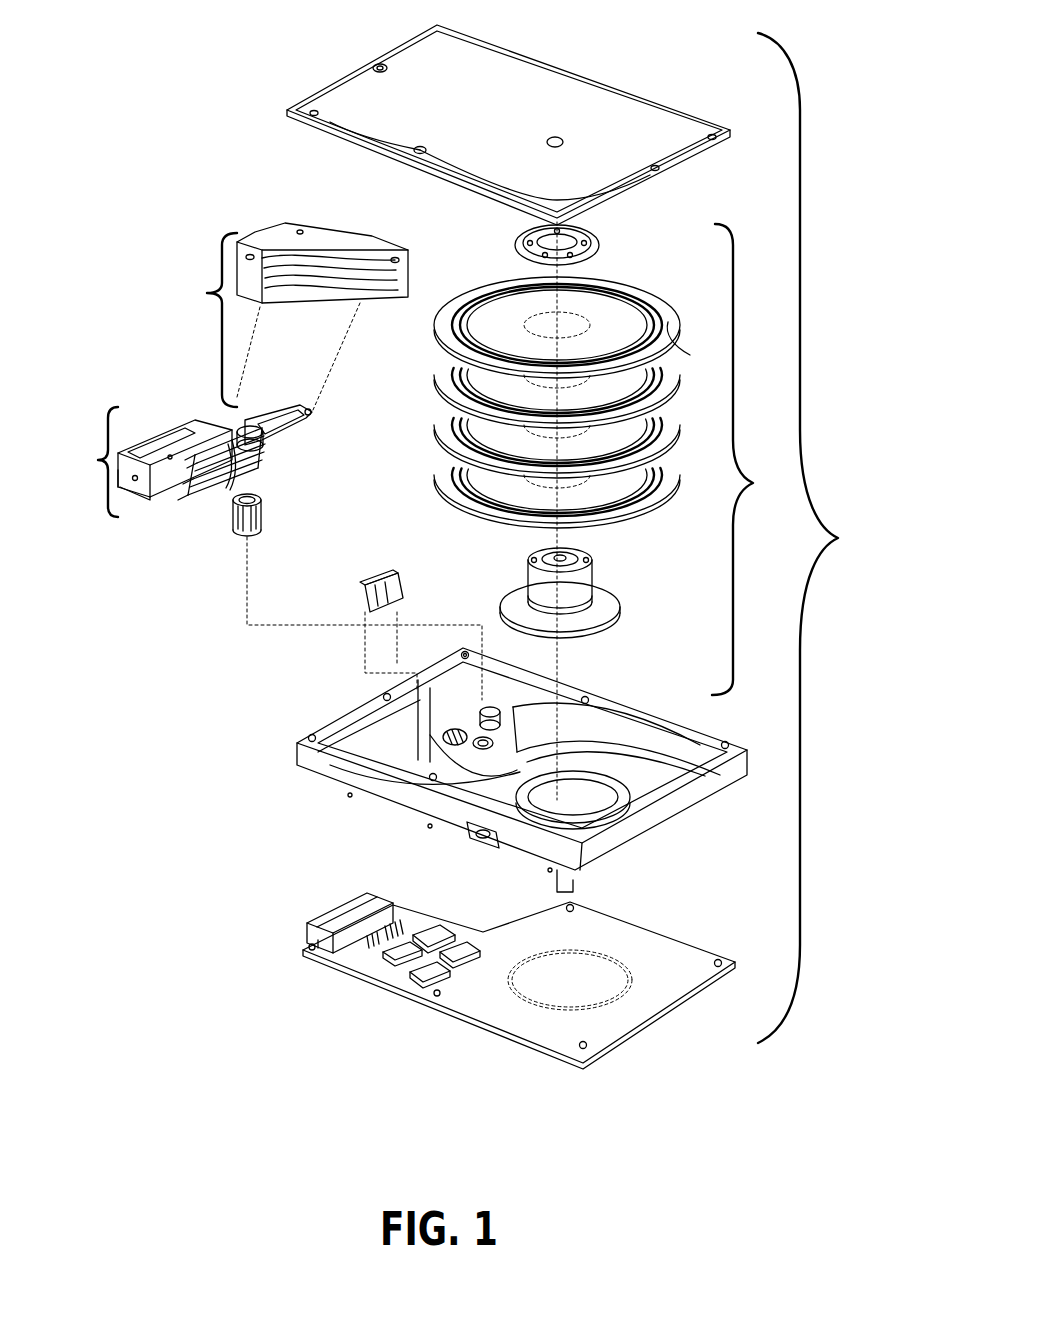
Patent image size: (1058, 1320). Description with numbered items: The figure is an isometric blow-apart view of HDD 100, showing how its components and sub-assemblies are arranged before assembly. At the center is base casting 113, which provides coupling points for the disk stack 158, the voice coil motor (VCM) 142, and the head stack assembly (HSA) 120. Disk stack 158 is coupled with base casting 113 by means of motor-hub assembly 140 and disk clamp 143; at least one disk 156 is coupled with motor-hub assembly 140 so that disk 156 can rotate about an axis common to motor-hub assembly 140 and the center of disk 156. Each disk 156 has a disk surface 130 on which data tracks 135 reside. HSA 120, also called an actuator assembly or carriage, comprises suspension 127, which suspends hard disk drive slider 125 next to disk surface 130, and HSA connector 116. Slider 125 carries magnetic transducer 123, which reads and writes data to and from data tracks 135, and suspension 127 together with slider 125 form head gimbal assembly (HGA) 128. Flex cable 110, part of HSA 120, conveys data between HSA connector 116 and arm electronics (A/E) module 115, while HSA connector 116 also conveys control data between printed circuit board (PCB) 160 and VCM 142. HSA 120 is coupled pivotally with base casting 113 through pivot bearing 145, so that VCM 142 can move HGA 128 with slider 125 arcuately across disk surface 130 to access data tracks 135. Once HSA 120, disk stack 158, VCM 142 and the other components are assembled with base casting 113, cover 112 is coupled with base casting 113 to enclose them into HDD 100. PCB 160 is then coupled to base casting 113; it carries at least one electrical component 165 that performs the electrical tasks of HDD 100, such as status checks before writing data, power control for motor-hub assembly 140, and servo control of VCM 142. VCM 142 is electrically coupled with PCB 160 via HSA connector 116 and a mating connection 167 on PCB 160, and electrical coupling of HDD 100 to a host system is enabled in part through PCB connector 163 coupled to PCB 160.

The HDD 100 is at (821, 538).
The cover 112 is at (582, 108).
The base casting 113 is at (317, 763).
The disk clamp 143 is at (520, 237).
The data tracks 135 is at (490, 300).
The disk surface 130 is at (684, 352).
The disk 156 is at (437, 322).
The disk stack 158 is at (754, 459).
The motor-hub assembly 140 is at (590, 612).
The voice coil motor (VCM) 142 is at (288, 315).
The head stack assembly (HSA) 120 is at (143, 462).
The HSA connector 116 is at (150, 500).
The flex cable 110 is at (195, 420).
The arm electronics (A/E) module 115 is at (220, 417).
The suspension 127 is at (197, 463).
The hard disk drive slider 125 is at (188, 498).
The magnetic transducer 123 is at (137, 539).
The head gimbal assembly (HGA) 128 is at (225, 488).
The pivot bearing 145 is at (232, 538).
The printed circuit board (PCB) 160 is at (342, 962).
The PCB connector 163 is at (342, 913).
The mating connection 167 is at (377, 940).
The electrical component 165 is at (423, 973).